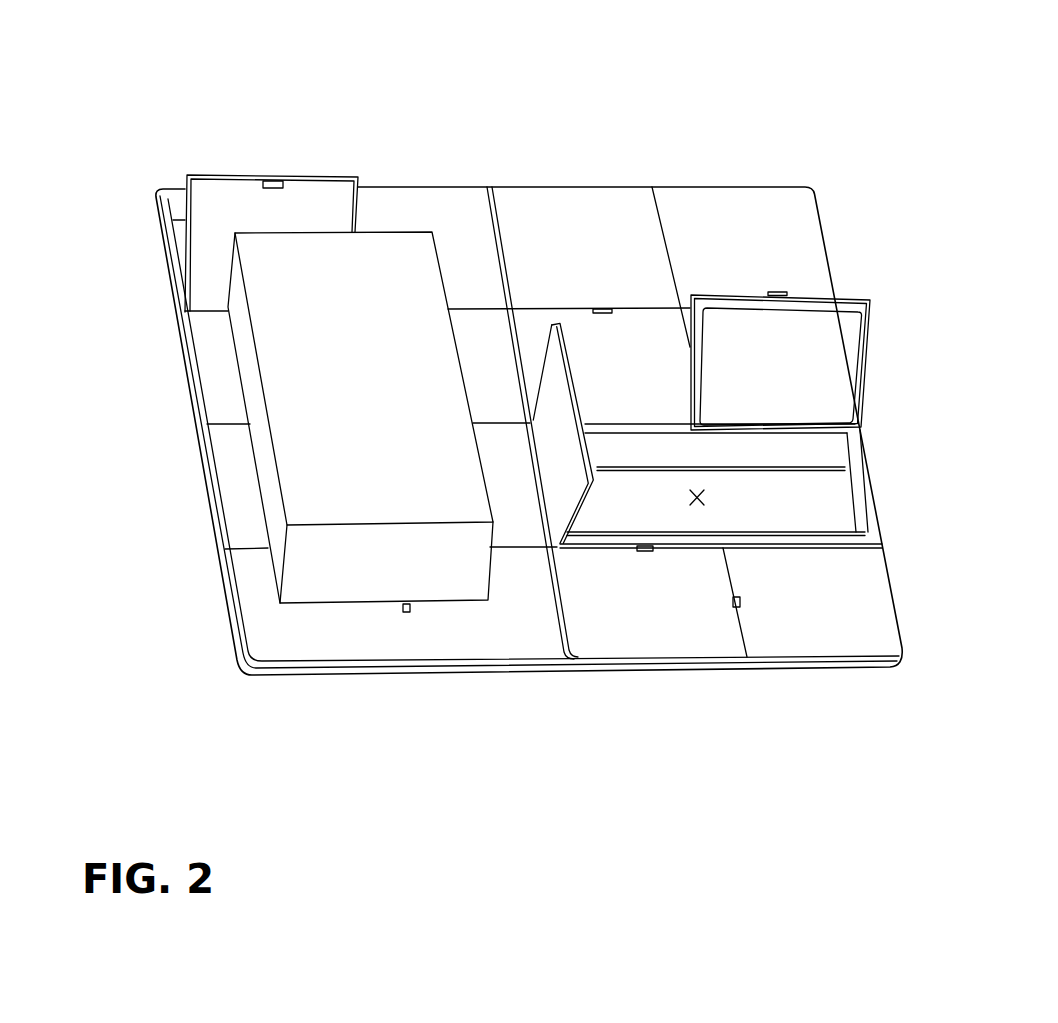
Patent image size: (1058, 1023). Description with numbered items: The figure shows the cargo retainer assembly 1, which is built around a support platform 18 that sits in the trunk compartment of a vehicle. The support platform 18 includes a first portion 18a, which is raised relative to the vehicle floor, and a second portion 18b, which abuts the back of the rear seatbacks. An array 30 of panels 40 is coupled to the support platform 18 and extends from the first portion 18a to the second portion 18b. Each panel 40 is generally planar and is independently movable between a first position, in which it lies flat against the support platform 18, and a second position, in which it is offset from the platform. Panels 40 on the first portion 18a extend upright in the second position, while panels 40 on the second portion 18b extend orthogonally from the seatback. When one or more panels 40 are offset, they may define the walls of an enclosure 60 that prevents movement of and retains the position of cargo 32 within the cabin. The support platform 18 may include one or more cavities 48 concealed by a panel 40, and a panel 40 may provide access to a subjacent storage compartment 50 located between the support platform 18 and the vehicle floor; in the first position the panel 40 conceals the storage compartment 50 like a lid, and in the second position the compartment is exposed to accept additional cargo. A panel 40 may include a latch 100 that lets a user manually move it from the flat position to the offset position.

The cargo retainer assembly 1 is at (553, 158).
The support platform 18 is at (627, 353).
The first portion 18a is at (180, 561).
The second portion 18b is at (137, 287).
The array 30 is at (631, 185).
The cargo 32 is at (342, 570).
The panel 40 is at (540, 337).
The cavity 48 is at (697, 495).
The storage compartment 50 is at (760, 517).
The enclosure 60 is at (448, 333).
The latch 100 is at (275, 175).